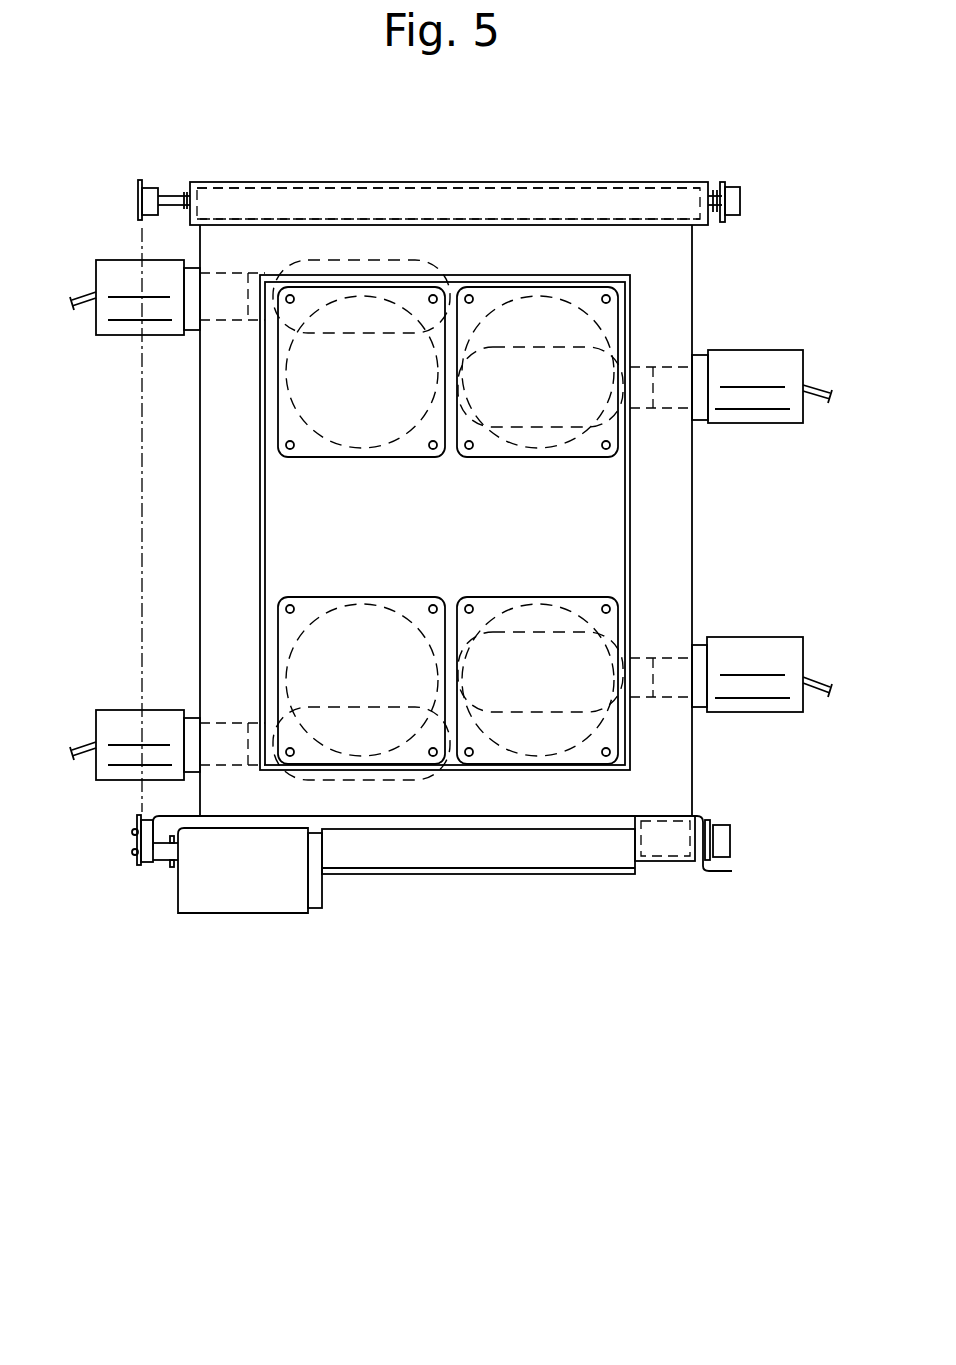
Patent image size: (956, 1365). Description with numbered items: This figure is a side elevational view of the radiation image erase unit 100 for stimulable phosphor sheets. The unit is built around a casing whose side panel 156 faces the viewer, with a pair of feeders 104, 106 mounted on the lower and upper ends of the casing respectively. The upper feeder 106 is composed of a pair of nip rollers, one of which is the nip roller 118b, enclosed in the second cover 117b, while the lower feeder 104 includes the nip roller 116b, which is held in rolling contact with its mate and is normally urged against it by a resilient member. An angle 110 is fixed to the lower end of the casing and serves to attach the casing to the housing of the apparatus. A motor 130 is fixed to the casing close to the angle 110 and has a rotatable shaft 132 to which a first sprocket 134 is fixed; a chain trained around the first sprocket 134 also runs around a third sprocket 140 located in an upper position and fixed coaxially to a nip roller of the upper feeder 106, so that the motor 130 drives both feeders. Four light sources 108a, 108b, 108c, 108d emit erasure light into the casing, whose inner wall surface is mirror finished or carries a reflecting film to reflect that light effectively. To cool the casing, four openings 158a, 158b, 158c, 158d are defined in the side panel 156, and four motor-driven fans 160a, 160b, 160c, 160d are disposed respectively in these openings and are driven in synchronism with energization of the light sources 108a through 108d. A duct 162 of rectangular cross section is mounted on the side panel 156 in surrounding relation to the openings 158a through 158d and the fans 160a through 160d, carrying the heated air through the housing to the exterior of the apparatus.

The radiation image erase unit 100 is at (694, 503).
The feeder 104 is at (682, 863).
The feeder 106 is at (486, 180).
The light source 108a is at (405, 262).
The light source 108b is at (567, 370).
The light source 108c is at (560, 712).
The light source 108d is at (412, 768).
The angle 110 is at (462, 875).
The nip roller 116b is at (660, 845).
The second cover 117b is at (278, 182).
The nip roller 118b is at (363, 205).
The motor 130 is at (250, 905).
The rotatable shaft 132 is at (160, 862).
The first sprocket 134 is at (137, 866).
The third sprocket 140 is at (137, 192).
The side panel 156 is at (643, 290).
The opening 158a is at (363, 411).
The opening 158b is at (541, 411).
The opening 158c is at (540, 641).
The opening 158d is at (363, 641).
The motor-driven fan 160a is at (323, 457).
The motor-driven fan 160b is at (545, 457).
The motor-driven fan 160c is at (535, 597).
The motor-driven fan 160d is at (340, 597).
The duct 162 is at (633, 565).